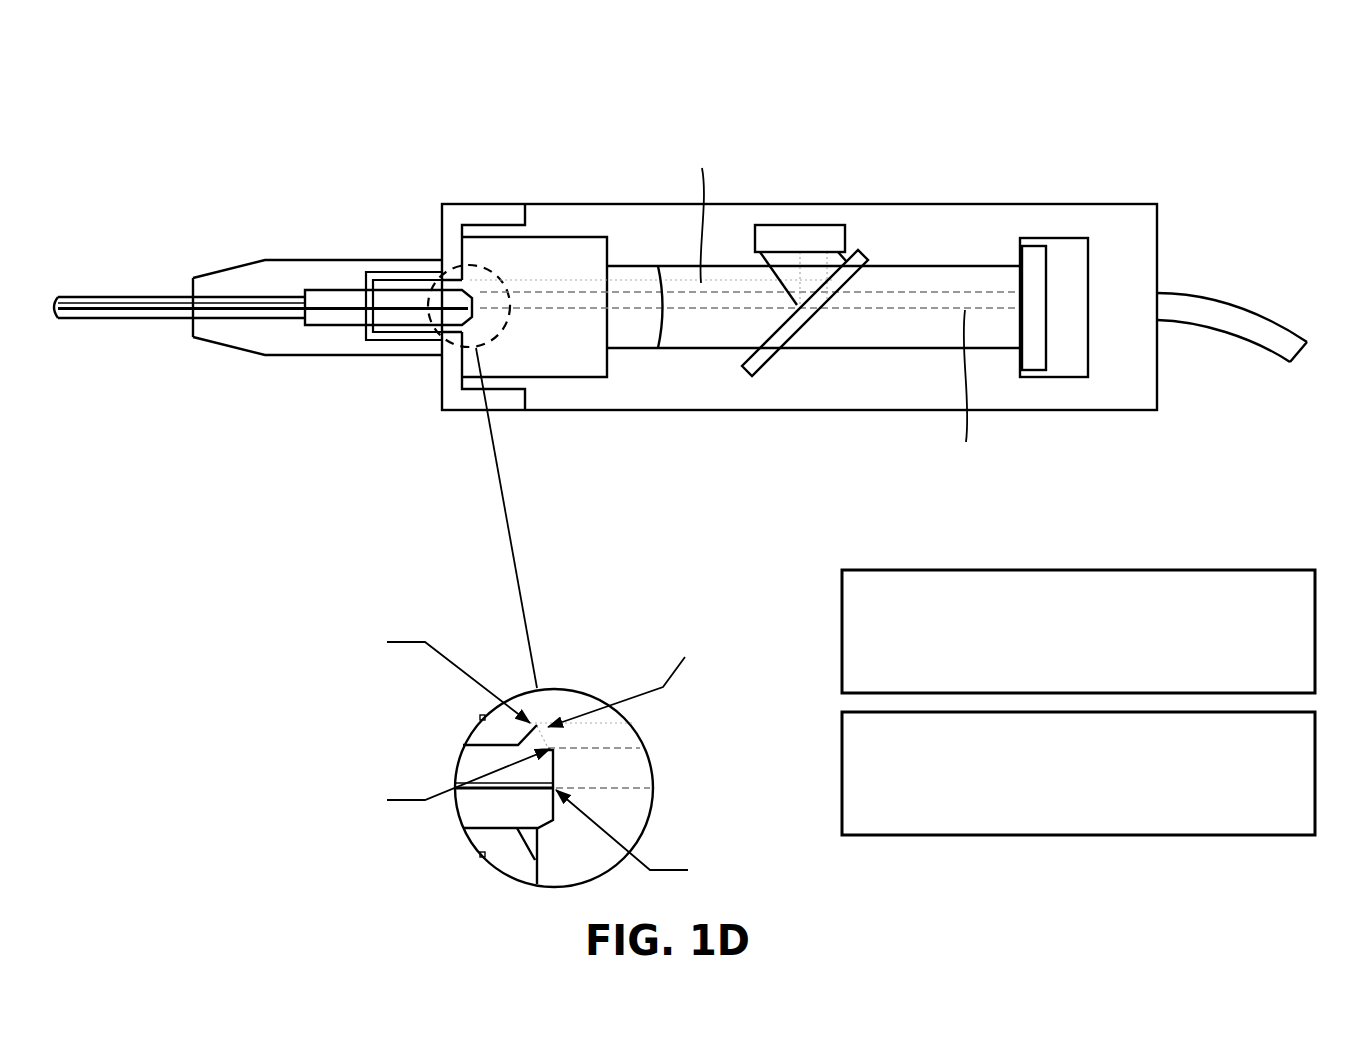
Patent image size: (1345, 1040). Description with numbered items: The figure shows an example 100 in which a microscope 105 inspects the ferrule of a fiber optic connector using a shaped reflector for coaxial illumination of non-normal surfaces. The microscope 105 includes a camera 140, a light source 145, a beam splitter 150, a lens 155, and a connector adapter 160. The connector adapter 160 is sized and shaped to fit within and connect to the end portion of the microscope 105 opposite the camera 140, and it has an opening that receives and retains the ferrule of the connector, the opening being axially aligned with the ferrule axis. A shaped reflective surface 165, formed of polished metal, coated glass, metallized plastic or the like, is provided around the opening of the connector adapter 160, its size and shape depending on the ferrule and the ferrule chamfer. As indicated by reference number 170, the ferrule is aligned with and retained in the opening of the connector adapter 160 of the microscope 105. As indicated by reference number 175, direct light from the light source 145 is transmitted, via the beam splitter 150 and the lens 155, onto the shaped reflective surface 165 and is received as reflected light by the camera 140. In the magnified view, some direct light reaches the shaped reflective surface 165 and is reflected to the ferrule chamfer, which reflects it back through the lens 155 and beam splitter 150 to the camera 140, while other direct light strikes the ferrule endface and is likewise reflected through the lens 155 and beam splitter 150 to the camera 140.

The example 100 is at (150, 58).
The microscope 105 is at (546, 204).
The camera 140 is at (1030, 343).
The light source 145 is at (797, 235).
The beam splitter 150 is at (768, 347).
The lens 155 is at (627, 333).
The connector adapter 160 is at (457, 400).
The shaped reflective surface 165 is at (527, 731).
The reference number 170 is at (1078, 631).
The reference number 175 is at (1078, 773).